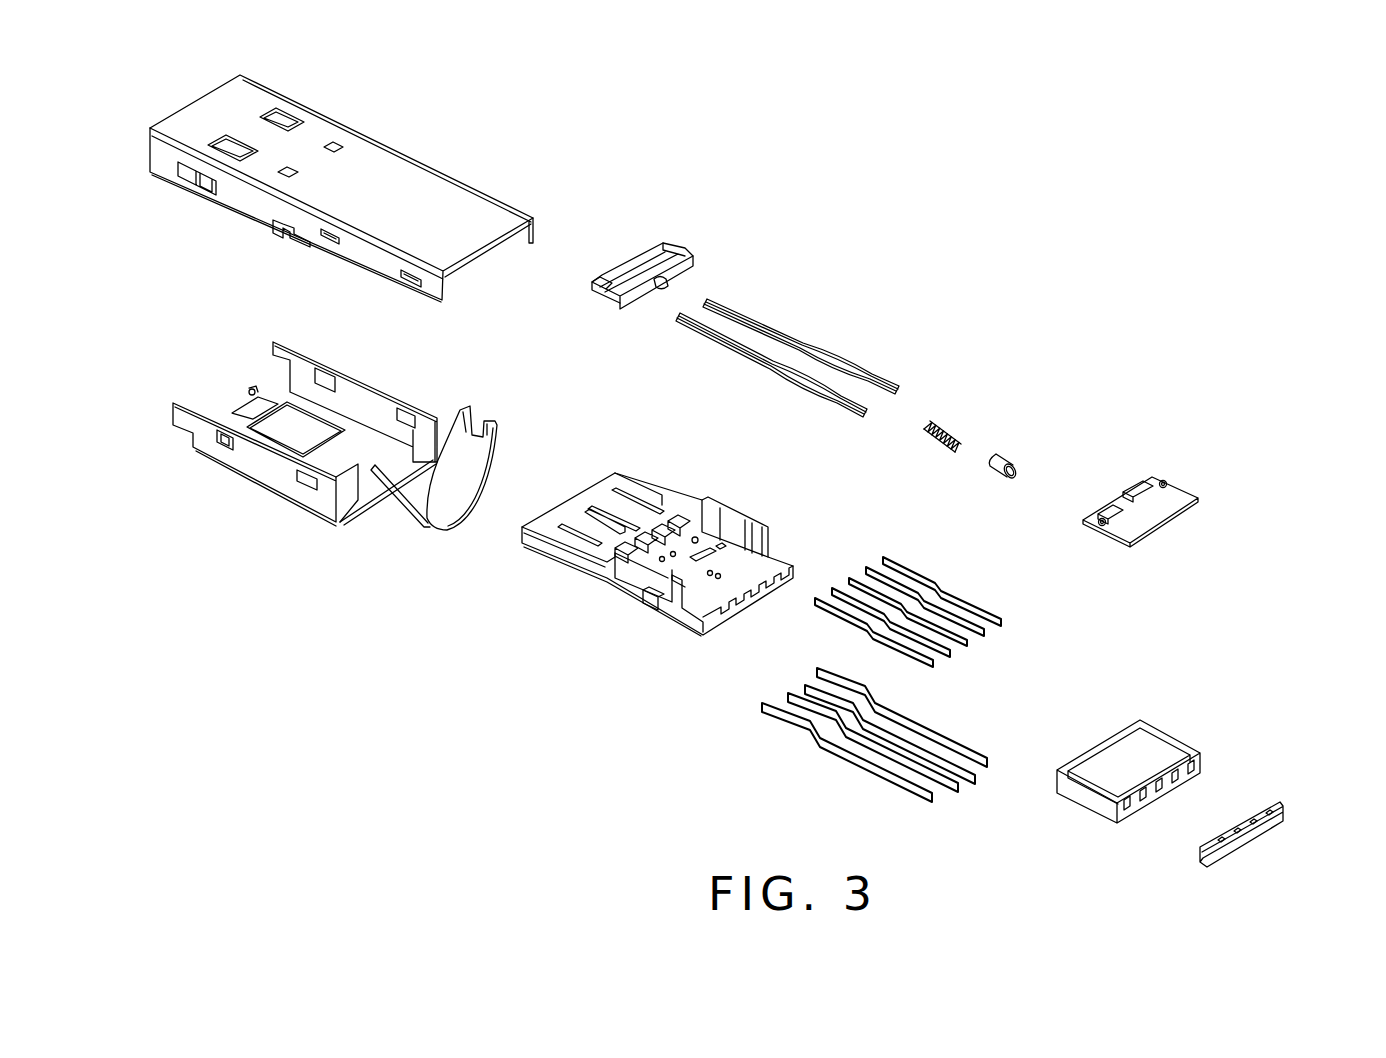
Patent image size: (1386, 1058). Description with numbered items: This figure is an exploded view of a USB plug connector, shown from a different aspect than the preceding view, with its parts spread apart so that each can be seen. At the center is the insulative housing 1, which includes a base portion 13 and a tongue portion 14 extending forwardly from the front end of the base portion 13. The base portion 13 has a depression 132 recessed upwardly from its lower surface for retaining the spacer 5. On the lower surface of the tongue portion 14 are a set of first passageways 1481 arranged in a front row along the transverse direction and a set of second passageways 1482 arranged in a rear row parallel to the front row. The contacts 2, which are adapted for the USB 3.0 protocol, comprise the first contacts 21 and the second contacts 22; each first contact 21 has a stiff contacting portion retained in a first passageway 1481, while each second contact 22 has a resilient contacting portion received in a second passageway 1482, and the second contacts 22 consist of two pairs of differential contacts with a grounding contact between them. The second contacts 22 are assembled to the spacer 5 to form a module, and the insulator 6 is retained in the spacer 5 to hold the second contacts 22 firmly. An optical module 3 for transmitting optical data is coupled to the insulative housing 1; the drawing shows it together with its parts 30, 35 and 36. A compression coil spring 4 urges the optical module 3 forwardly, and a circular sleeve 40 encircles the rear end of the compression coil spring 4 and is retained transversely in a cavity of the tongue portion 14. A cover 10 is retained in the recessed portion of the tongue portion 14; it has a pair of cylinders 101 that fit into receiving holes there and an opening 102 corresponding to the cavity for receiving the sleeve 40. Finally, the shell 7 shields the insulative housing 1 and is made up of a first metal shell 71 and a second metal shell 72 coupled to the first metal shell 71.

The insulative housing 1 is at (707, 482).
The base portion 13 is at (667, 597).
The depression 132 is at (717, 540).
The tongue portion 14 is at (570, 513).
The first passageways 1481 is at (623, 497).
The second passageways 1482 is at (670, 517).
The contacts 2 is at (1030, 505).
The first contacts 21 is at (932, 713).
The second contacts 22 is at (933, 562).
The optical module 3 is at (662, 152).
The holder 30 is at (687, 248).
The cables 35 is at (827, 340).
The protrusion 36 is at (653, 277).
The compression coil spring 4 is at (953, 423).
The circular sleeve 40 is at (1022, 448).
The spacer 5 is at (1173, 717).
The insulator 6 is at (1287, 795).
The shell 7 is at (155, 88).
The first metal shell 71 is at (410, 128).
The second metal shell 72 is at (393, 372).
The cover 10 is at (1193, 485).
The cylinders 101 is at (1165, 480).
The opening 102 is at (1133, 517).